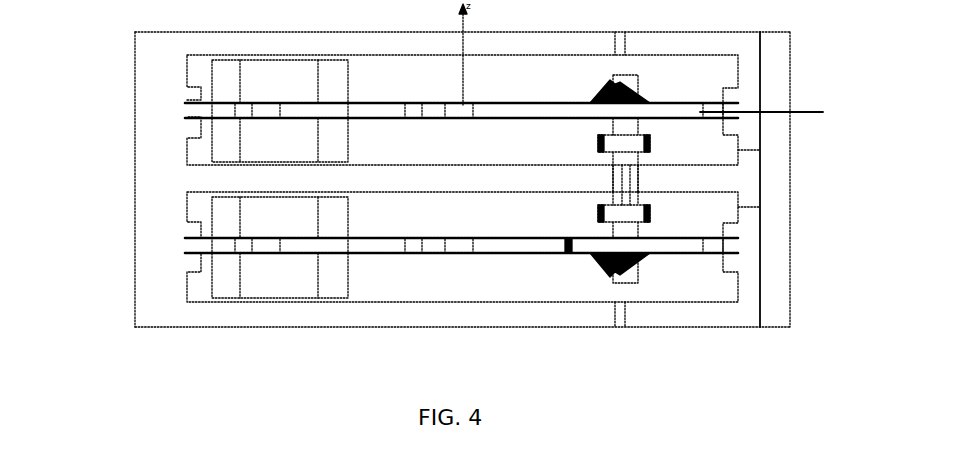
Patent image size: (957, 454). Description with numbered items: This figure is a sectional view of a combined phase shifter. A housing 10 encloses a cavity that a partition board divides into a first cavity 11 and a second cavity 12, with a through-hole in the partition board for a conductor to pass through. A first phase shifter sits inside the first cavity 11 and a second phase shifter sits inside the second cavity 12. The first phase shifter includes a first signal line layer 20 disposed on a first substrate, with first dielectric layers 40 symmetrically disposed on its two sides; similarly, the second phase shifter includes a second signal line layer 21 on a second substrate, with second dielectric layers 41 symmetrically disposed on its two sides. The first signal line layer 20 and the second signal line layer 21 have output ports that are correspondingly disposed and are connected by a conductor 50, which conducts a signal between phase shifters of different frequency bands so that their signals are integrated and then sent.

The housing 10 is at (767, 258).
The first cavity 11 is at (695, 82).
The second cavity 12 is at (442, 284).
The first signal line layer 20 is at (200, 110).
The second signal line layer 21 is at (207, 245).
The first dielectric layers 40 is at (220, 74).
The second dielectric layers 41 is at (215, 203).
The conductor 50 is at (630, 178).